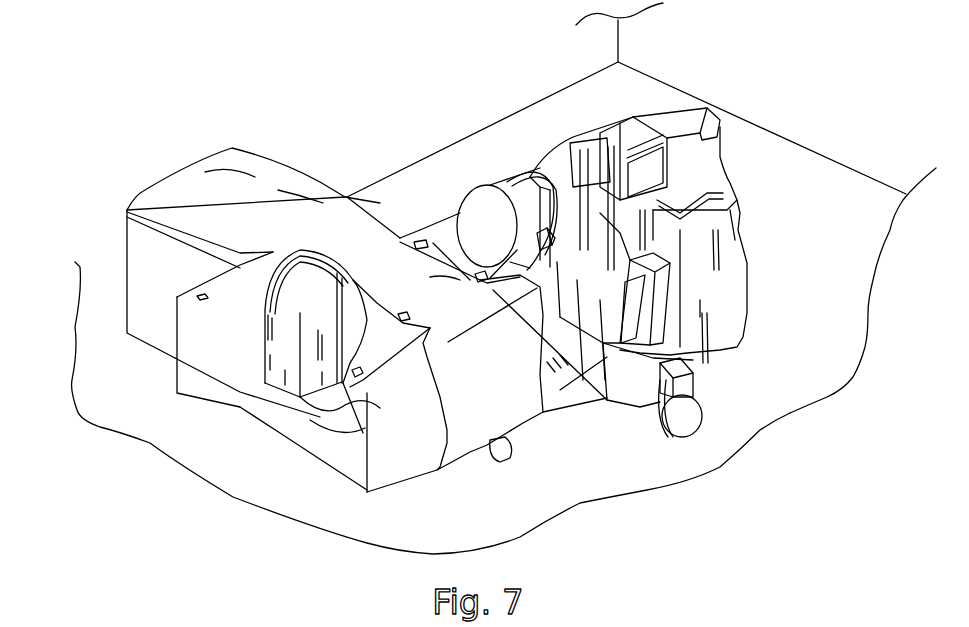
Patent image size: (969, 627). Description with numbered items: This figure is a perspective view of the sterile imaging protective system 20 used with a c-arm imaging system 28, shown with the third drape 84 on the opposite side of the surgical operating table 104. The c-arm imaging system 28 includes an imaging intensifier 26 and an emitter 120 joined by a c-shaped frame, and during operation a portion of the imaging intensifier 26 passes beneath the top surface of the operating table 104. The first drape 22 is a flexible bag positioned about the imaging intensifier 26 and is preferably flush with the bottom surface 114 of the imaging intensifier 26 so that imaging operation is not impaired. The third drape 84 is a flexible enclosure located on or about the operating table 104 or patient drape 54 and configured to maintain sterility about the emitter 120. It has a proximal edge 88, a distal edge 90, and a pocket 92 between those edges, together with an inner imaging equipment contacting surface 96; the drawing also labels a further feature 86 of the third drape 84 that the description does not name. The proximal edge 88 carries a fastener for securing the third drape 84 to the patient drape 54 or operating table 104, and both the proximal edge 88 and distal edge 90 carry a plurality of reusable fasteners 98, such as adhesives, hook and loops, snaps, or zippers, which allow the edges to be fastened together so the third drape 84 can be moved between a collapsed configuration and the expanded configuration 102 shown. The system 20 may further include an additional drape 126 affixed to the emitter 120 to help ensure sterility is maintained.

The sterile imaging protective system 20 is at (473, 95).
The first drape 22 is at (455, 150).
The imaging intensifier 26 is at (510, 197).
The c-arm imaging system 28 is at (609, 461).
The patient drape 54 is at (607, 400).
The third drape 84 is at (154, 280).
The fold line 86 is at (212, 360).
The proximal edge 88 is at (373, 290).
The distal edge 90 is at (350, 387).
The pocket 92 is at (260, 410).
The inner imaging equipment contacting surface 96 is at (390, 467).
The reusable fasteners 98 is at (200, 296).
The expanded configuration 102 is at (187, 343).
The surgical operating table 104 is at (503, 380).
The bottom surface 114 is at (455, 210).
The emitter 120 is at (295, 288).
The drape 126 is at (707, 140).